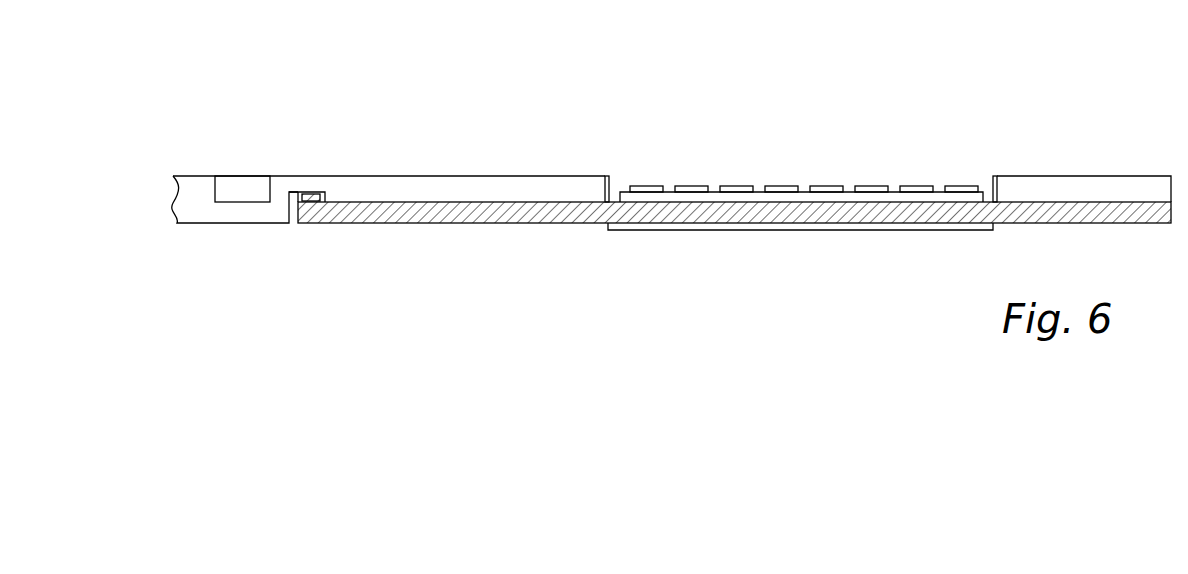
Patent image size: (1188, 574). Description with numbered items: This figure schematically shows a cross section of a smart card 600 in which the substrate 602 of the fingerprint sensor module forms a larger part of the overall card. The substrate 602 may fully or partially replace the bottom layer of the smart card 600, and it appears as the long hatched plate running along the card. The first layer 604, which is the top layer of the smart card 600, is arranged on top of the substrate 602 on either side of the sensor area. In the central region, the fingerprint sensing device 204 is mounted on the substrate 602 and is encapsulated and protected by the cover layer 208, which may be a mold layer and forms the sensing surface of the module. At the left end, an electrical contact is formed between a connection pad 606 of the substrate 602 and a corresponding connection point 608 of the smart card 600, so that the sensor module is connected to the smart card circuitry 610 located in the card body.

The smart card 600 is at (583, 90).
The smart card circuitry 610 is at (243, 190).
The connection point 608 is at (311, 192).
The connection pad 606 is at (311, 202).
The first layer 604 is at (437, 186).
The substrate 602 is at (829, 222).
The cover layer 208 is at (613, 187).
The fingerprint sensing device 204 is at (961, 190).